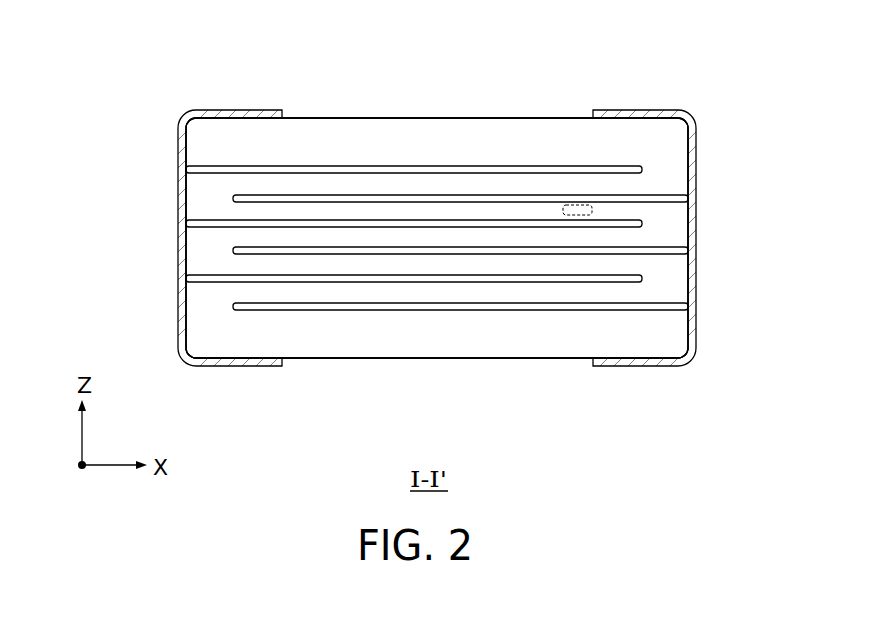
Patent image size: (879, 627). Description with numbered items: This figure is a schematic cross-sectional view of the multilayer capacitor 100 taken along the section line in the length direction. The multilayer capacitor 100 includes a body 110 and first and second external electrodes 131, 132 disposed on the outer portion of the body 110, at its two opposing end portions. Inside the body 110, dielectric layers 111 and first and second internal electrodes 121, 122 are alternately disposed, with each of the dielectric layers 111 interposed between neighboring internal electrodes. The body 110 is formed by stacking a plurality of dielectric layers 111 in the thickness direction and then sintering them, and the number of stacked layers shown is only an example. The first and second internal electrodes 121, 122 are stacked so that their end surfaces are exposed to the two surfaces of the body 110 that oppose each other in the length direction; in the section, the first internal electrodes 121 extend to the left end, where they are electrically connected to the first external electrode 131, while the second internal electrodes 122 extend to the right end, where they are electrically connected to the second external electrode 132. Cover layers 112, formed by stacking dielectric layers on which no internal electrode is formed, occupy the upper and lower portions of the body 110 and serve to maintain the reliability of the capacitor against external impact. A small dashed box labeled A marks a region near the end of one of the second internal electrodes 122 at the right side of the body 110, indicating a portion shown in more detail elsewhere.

The multilayer capacitor 100 is at (120, 40).
The body 110 is at (472, 118).
The dielectric layer 111 is at (352, 187).
The cover layer 112 is at (417, 130).
The first internal electrode 121 is at (248, 166).
The second internal electrode 122 is at (664, 196).
The first external electrode 131 is at (180, 243).
The second external electrode 132 is at (697, 180).
The region A is at (592, 208).